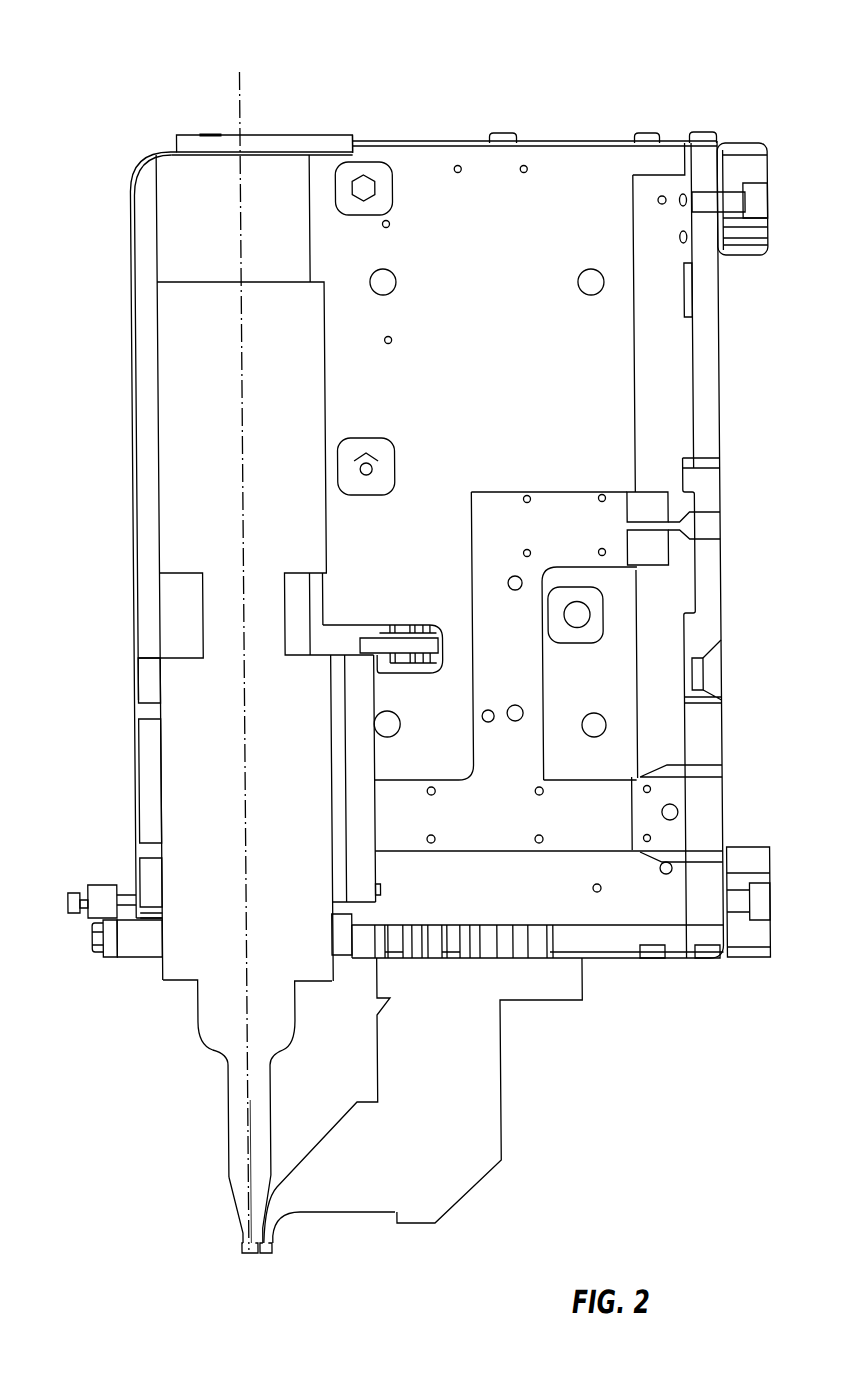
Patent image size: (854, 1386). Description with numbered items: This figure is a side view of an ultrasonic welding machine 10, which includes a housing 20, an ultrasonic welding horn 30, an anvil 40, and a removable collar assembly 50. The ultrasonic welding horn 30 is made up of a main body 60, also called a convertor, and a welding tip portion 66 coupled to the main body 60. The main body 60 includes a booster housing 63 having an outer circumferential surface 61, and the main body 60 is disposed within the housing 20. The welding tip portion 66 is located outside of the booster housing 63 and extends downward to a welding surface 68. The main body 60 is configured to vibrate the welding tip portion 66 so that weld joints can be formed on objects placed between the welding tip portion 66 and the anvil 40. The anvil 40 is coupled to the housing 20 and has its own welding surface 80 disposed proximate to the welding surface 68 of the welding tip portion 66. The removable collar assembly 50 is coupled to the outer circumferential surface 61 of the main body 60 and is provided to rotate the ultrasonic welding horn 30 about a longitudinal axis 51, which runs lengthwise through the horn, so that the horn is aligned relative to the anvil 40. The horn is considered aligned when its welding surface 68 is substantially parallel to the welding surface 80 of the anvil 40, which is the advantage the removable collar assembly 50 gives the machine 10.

The ultrasonic welding machine 10 is at (636, 62).
The housing 20 is at (138, 603).
The ultrasonic welding horn 30 is at (222, 996).
The anvil 40 is at (453, 1168).
The removable collar assembly 50 is at (106, 938).
The longitudinal axis 51 is at (245, 88).
The main body 60 is at (184, 458).
The outer circumferential surface 61 is at (160, 797).
The booster housing 63 is at (153, 745).
The welding tip portion 66 is at (237, 1102).
The welding surface 68 is at (251, 1255).
The welding surface 80 is at (256, 1255).